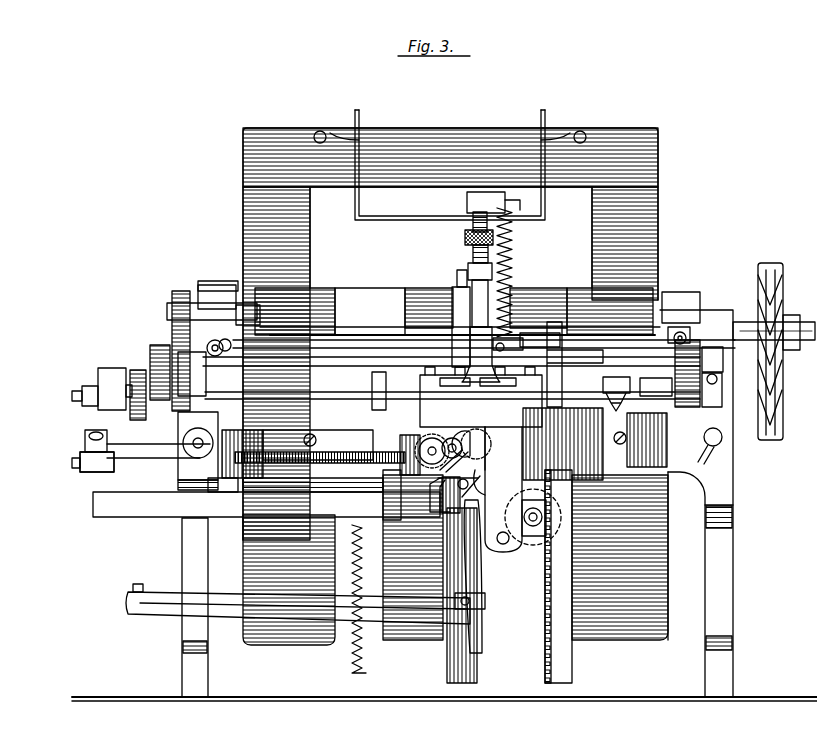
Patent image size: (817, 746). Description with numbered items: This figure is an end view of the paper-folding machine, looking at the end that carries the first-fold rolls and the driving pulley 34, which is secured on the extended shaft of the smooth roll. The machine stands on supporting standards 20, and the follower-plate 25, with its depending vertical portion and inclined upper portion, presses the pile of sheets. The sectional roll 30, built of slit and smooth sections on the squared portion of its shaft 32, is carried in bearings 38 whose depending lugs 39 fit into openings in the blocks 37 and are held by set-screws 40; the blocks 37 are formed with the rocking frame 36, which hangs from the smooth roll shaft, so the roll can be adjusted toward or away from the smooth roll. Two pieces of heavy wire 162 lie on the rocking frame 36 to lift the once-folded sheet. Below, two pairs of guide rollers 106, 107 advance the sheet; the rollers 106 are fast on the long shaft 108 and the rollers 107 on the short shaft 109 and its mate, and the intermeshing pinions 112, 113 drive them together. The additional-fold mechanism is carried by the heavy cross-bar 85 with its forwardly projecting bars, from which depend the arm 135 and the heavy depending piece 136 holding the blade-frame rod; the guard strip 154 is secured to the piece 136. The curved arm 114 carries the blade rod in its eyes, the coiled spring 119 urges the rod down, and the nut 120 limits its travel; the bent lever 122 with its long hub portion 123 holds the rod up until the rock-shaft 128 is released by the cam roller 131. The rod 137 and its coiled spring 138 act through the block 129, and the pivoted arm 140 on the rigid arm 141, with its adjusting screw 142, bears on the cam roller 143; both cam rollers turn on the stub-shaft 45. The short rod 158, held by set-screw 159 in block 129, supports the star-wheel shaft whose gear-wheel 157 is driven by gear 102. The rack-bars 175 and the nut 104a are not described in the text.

The follower-plate 25 is at (658, 195).
The supporting standards 20 is at (734, 556).
The pieces of heavy wire 162 is at (376, 336).
The sectional roll 30 is at (606, 300).
The guide rollers 106 is at (530, 333).
The shaft 108 is at (296, 364).
The shaft 109 is at (292, 398).
The guide rollers 107 is at (578, 427).
The shaft 32 is at (212, 305).
The bearings 38 is at (216, 283).
The depending lugs 39 is at (256, 347).
The blocks 37 is at (171, 320).
The rocking frame 36 is at (273, 345).
The set-screws 40 is at (228, 352).
The cam roller 131 is at (137, 370).
The cam roller 143 is at (108, 368).
The stub-shaft 45 is at (72, 396).
The pivoted arm 140 is at (85, 450).
The rigid arm 141 is at (160, 450).
The adjusting screw 142 is at (97, 467).
The coiled spring 138 is at (286, 470).
The rock-shaft 128 is at (352, 418).
The rod 137 is at (226, 478).
The short rod 158 is at (358, 478).
The block 129 is at (392, 470).
The gear-wheel 157 is at (428, 470).
The guard strip 154 is at (138, 512).
The long hub portion 123 is at (440, 337).
The nut 120 is at (465, 238).
The coiled spring 119 is at (512, 254).
The curved arm 114 is at (506, 340).
The bent lever 122 is at (426, 395).
The set-screw 159 is at (437, 437).
The gear 102 is at (458, 438).
The depending arm 135 is at (488, 462).
The heavy depending piece 136 is at (452, 543).
The rack 175 is at (388, 655).
The pinion 112 is at (712, 347).
The nut 104a is at (640, 400).
The pinion 113 is at (696, 445).
The heavy cross-bar 85 is at (683, 466).
The driving pulley 34 is at (766, 275).